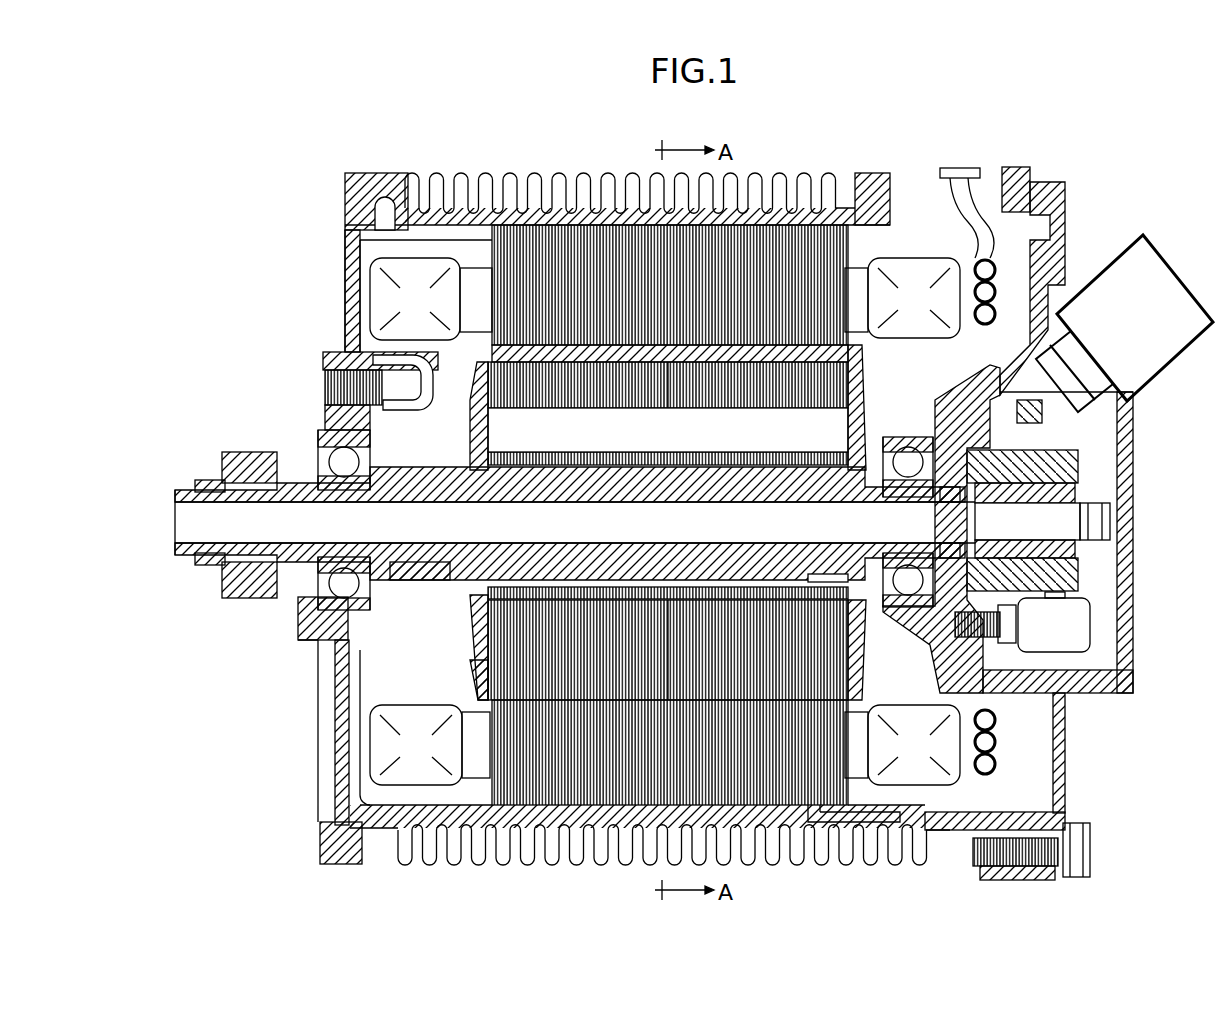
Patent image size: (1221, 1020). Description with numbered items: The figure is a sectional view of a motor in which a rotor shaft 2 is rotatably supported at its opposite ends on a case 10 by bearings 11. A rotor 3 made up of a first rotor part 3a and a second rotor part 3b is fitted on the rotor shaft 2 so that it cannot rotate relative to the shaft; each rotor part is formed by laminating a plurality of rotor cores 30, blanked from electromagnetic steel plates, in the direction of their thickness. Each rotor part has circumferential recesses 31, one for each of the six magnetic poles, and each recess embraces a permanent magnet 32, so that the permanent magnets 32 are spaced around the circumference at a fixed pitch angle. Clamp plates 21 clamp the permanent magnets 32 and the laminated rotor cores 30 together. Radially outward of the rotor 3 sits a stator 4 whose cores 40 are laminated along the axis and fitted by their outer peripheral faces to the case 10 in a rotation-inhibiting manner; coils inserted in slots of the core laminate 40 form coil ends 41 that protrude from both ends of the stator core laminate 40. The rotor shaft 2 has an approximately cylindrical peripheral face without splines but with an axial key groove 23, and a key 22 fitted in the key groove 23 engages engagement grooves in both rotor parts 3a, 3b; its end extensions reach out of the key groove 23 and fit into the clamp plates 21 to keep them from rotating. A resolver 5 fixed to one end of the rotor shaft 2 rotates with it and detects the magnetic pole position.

The rotor shaft 2 is at (405, 565).
The rotor 3 is at (462, 623).
The first rotor part 3a is at (488, 708).
The second rotor part 3b is at (856, 682).
The stator 4 is at (808, 800).
The resolver 5 is at (1080, 472).
The case 10 is at (347, 264).
The bearings 11 is at (370, 443).
The clamp plates 21 is at (475, 395).
The key 22 is at (628, 578).
The key groove 23 is at (822, 575).
The rotor cores 30 is at (570, 410).
The circumferential recesses 31 is at (486, 360).
The permanent magnets 32 is at (858, 350).
The stator cores 40 is at (850, 238).
The coil ends 41 is at (432, 319).